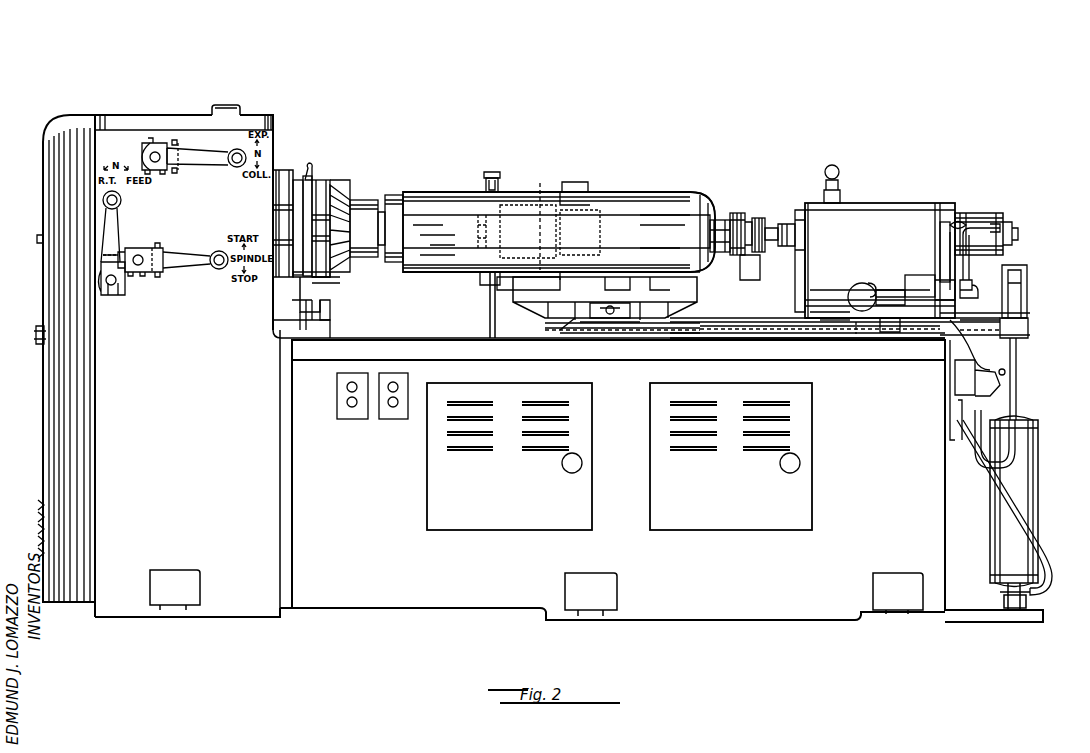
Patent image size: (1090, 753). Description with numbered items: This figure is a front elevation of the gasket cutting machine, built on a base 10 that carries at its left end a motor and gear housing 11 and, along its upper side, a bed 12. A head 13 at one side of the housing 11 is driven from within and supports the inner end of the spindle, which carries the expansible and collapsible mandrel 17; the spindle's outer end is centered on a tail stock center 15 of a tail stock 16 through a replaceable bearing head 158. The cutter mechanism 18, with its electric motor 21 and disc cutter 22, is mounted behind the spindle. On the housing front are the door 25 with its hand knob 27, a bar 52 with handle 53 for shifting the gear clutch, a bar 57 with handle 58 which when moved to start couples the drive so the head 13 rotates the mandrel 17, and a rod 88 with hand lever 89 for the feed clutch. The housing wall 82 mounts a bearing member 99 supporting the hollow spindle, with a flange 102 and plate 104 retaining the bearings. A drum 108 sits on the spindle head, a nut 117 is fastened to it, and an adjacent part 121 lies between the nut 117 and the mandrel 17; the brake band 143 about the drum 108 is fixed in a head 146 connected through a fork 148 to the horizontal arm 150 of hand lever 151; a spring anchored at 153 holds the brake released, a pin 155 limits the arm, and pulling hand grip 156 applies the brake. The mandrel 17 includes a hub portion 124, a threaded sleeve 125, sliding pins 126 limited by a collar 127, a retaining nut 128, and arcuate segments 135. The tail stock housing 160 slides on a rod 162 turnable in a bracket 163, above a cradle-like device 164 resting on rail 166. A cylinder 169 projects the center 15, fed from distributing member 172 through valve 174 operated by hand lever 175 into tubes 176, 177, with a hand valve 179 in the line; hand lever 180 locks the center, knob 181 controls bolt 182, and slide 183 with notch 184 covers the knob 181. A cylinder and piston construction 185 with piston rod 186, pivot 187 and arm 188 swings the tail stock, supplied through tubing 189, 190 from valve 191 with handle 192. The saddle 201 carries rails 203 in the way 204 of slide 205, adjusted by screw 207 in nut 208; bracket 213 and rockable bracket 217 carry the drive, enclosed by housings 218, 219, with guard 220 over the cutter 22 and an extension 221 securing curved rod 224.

The base 10 is at (387, 618).
The motor and gear housing 11 is at (242, 626).
The bed 12 is at (418, 336).
The head 13 is at (350, 179).
The tail stock center 15 is at (784, 222).
The tail stock 16 is at (902, 199).
The mandrel 17 is at (432, 187).
The cutter mechanism 18 is at (501, 166).
The electric motor 21 is at (650, 200).
The disc cutter 22 is at (488, 182).
The door 25 is at (45, 410).
The hand knob 27 is at (34, 334).
The bar 52 is at (155, 152).
The handle 53 is at (192, 155).
The bar 57 is at (140, 266).
The handle 58 is at (185, 255).
The housing wall 82 is at (289, 154).
The rod 88 is at (100, 282).
The hand lever 89 is at (110, 240).
The bearing member 99 is at (300, 170).
The flange 102 is at (315, 175).
The plate 104 is at (322, 180).
The drum 108 is at (340, 188).
The nut 117 is at (362, 200).
The coupling 121 is at (395, 195).
The hub portion 124 is at (705, 236).
The externally threaded sleeve 125 is at (722, 218).
The pins 126 is at (741, 212).
The collar 127 is at (758, 216).
The nut 128 is at (770, 226).
The bars or segments 135 is at (668, 207).
The brake band 143 is at (333, 178).
The head 146 is at (340, 278).
The fork 148 is at (322, 300).
The horizontal arm 150 is at (330, 318).
The hand lever 151 is at (320, 242).
The anchor 153 is at (280, 208).
The pin 155 is at (300, 312).
The hand grip 156 is at (312, 176).
The bearing head 158 is at (768, 255).
The housing 160 is at (880, 292).
The rod 162 is at (752, 330).
The bracket 163 is at (990, 310).
The cradle-like device 164 is at (827, 348).
The rail 166 is at (768, 340).
The cylinder 169 is at (982, 213).
The distributing member 172 is at (954, 428).
The valve 174 is at (920, 295).
The hand lever 175 is at (875, 276).
The tube 176 is at (940, 250).
The tube 177 is at (988, 272).
The hand valve 179 is at (980, 286).
The hand lever 180 is at (833, 165).
The knob 181 is at (858, 314).
The bolt 182 is at (862, 345).
The slide 183 is at (900, 345).
The notch 184 is at (898, 282).
The cylinder and piston construction 185 is at (1038, 496).
The piston rod 186 is at (1018, 396).
The pivot 187 is at (1027, 270).
The arm 188 is at (1025, 300).
The tubing 189 is at (1020, 460).
The tubing 190 is at (1032, 550).
The valve 191 is at (955, 385).
The handle 192 is at (1010, 359).
The saddle 201 is at (656, 339).
The rails 203 is at (582, 302).
The way 204 is at (575, 326).
The slide 205 is at (712, 302).
The screw 207 is at (610, 320).
The nut 208 is at (628, 325).
The bracket 213 is at (518, 286).
The bracket 217 is at (540, 183).
The housing 218 is at (572, 200).
The housing 219 is at (565, 182).
The guard 220 is at (493, 170).
The extension 221 is at (490, 285).
The curved rod 224 is at (490, 318).